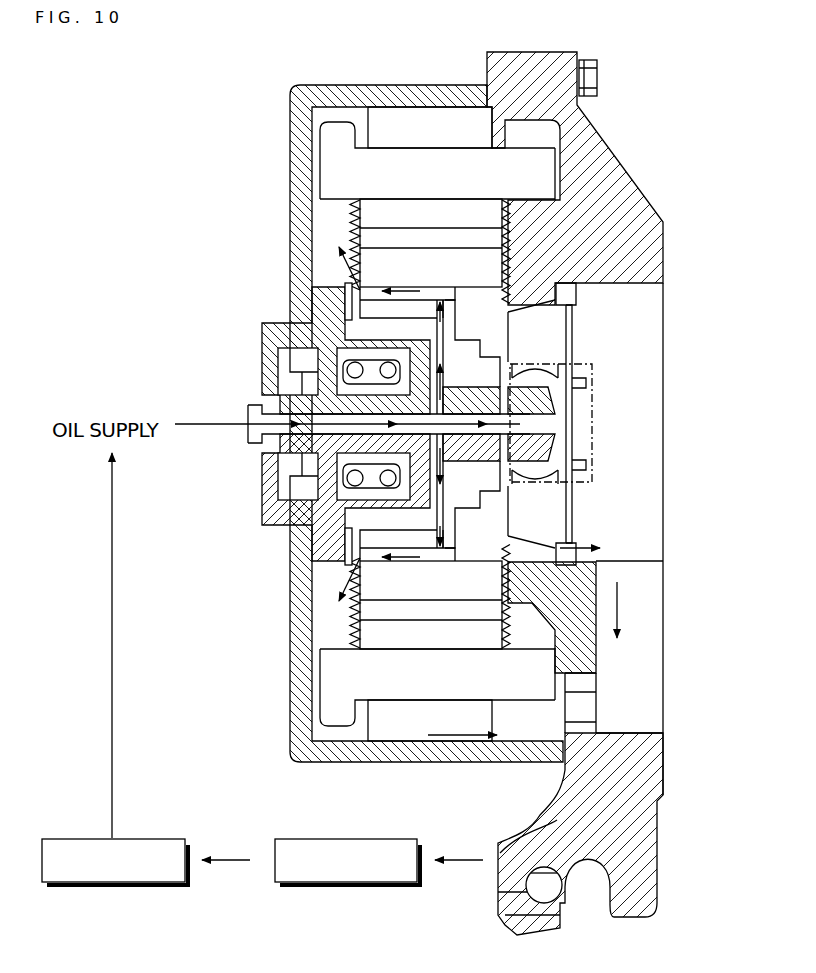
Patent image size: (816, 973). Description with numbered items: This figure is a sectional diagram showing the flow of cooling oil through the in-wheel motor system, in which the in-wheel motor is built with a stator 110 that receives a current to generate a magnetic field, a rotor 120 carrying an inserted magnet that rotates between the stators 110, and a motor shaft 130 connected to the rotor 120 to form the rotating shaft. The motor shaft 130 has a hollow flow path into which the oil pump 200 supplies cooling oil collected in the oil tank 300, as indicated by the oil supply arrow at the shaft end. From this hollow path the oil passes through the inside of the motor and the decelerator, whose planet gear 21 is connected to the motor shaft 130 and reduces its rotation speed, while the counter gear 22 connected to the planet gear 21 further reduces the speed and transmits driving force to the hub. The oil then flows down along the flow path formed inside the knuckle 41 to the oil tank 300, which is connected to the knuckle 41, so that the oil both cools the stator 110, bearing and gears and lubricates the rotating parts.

The stator 110 is at (365, 167).
The rotor 120 is at (362, 262).
The motor shaft 130 is at (547, 426).
The planet gear 21 is at (545, 518).
The counter gear 22 is at (640, 651).
The knuckle 41 is at (648, 783).
The oil pump 200 is at (160, 838).
The oil tank 300 is at (390, 838).